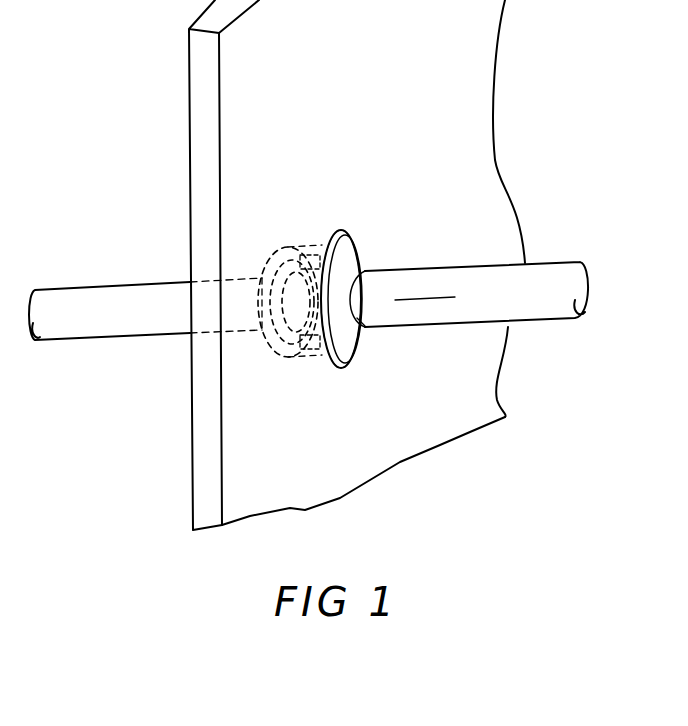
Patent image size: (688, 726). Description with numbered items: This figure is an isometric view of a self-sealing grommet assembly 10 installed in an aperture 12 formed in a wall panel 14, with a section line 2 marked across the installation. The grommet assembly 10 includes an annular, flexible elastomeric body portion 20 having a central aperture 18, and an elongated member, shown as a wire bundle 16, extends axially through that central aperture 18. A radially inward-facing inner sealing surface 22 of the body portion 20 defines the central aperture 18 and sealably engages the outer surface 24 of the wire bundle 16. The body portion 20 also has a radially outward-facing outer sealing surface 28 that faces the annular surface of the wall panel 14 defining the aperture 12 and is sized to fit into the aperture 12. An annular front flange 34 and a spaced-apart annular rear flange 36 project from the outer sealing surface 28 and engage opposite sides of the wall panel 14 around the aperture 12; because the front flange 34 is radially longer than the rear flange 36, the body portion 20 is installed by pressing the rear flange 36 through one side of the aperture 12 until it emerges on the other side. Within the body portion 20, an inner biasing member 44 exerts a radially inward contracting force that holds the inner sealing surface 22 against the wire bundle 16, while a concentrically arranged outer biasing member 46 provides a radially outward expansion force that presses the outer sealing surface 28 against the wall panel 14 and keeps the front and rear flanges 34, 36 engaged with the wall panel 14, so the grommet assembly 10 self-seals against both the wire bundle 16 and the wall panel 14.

The section line 2- 2 is at (363, 247).
The grommet assembly 10 is at (540, 92).
The aperture 12 is at (311, 367).
The wall panel 14 is at (503, 215).
The wire bundle 16 is at (556, 275).
The central aperture 18 is at (357, 318).
The body portion 20 is at (345, 226).
The inner sealing surface 22 is at (315, 243).
The outer surface 24 is at (452, 309).
The outer sealing surface 28 is at (292, 247).
The front flange 34 is at (362, 255).
The rear flange 36 is at (276, 241).
The inner biasing member 44 is at (327, 366).
The outer biasing member 46 is at (305, 362).